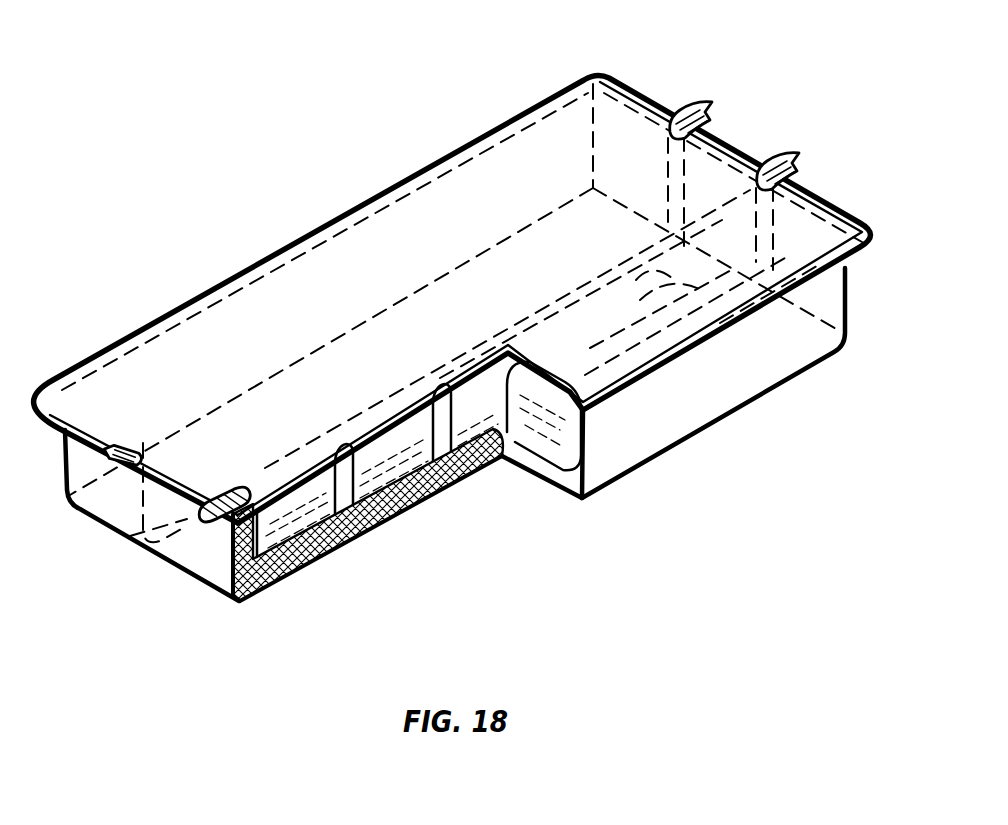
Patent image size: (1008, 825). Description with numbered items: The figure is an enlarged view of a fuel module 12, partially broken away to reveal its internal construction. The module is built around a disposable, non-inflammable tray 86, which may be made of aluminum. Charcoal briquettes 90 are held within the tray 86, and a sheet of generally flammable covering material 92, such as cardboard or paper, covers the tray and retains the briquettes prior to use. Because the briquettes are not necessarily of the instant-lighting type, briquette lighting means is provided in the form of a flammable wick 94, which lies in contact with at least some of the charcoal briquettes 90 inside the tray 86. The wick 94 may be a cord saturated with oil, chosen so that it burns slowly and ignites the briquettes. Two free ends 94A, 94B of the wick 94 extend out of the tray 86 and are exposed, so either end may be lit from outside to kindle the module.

The tray 12 is at (272, 132).
The tray 86 is at (660, 436).
The charcoal briquettes 90 is at (290, 522).
The sheet of covering material 92 is at (363, 535).
The flammable wick 94 is at (420, 497).
The free end of wick 94A is at (202, 520).
The free end of wick 94B is at (796, 158).